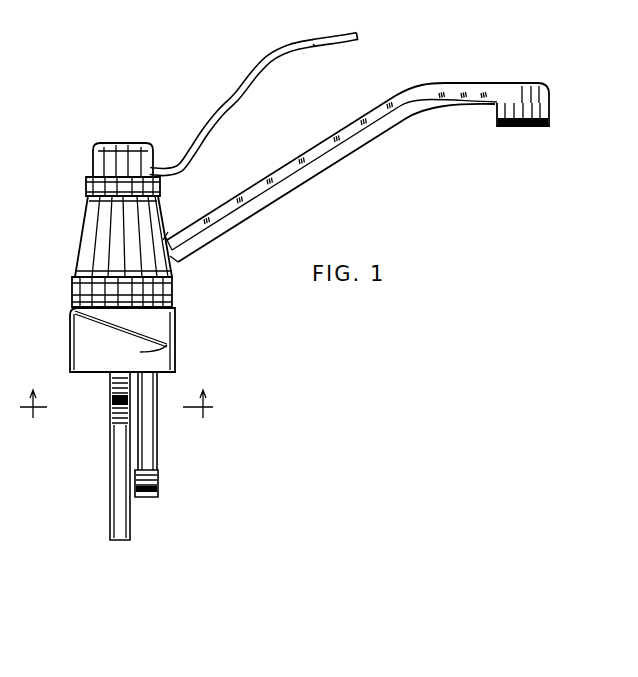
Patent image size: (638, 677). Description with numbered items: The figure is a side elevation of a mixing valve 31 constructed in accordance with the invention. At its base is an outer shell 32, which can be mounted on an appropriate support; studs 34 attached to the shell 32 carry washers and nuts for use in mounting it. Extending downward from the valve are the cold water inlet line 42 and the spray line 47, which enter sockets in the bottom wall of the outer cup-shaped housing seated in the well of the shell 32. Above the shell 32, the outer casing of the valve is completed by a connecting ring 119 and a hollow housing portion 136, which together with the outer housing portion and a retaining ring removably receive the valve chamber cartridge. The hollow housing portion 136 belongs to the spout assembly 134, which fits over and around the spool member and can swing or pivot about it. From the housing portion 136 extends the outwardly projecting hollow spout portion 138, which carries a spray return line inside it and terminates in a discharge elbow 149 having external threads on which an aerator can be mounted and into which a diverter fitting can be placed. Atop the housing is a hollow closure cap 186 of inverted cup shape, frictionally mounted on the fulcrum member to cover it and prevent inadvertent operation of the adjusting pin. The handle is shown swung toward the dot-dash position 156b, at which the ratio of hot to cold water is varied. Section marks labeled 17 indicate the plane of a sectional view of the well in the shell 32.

The mixing valve 31 is at (52, 253).
The hollow closure cap 186 is at (112, 155).
The hollow housing portion 136 is at (103, 230).
The spout assembly 134 is at (168, 233).
The connecting ring 119 is at (153, 290).
The outer shell 32 is at (150, 352).
The studs 34 is at (112, 407).
The cold water inlet line 42 is at (98, 456).
The spray line 47 is at (147, 443).
The section line 17 is at (116, 417).
The spout portion 138 is at (347, 148).
The discharge elbow 149 is at (549, 110).
The handle position 156b is at (318, 45).